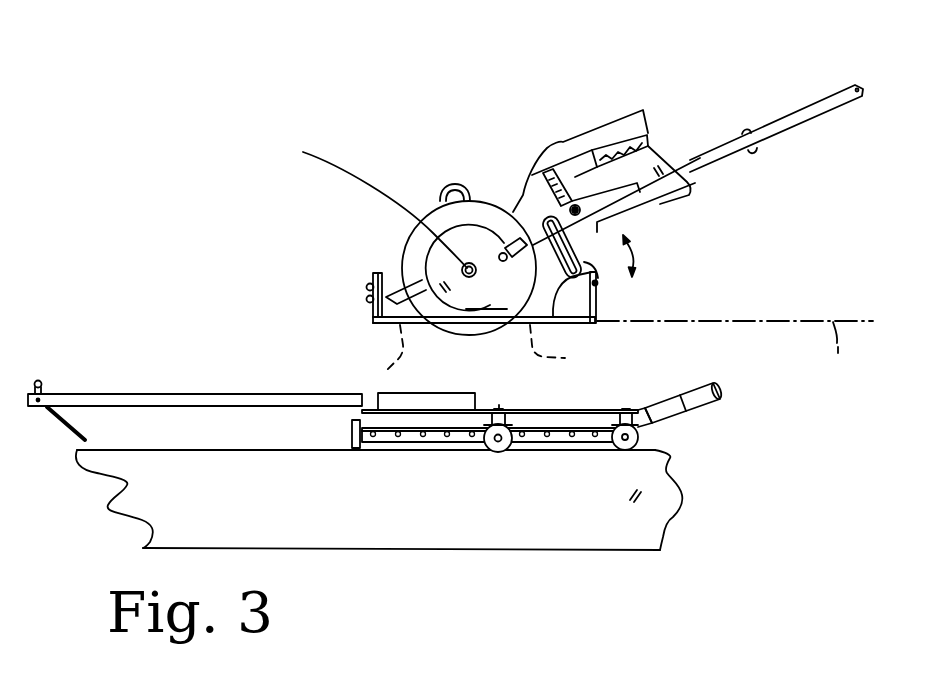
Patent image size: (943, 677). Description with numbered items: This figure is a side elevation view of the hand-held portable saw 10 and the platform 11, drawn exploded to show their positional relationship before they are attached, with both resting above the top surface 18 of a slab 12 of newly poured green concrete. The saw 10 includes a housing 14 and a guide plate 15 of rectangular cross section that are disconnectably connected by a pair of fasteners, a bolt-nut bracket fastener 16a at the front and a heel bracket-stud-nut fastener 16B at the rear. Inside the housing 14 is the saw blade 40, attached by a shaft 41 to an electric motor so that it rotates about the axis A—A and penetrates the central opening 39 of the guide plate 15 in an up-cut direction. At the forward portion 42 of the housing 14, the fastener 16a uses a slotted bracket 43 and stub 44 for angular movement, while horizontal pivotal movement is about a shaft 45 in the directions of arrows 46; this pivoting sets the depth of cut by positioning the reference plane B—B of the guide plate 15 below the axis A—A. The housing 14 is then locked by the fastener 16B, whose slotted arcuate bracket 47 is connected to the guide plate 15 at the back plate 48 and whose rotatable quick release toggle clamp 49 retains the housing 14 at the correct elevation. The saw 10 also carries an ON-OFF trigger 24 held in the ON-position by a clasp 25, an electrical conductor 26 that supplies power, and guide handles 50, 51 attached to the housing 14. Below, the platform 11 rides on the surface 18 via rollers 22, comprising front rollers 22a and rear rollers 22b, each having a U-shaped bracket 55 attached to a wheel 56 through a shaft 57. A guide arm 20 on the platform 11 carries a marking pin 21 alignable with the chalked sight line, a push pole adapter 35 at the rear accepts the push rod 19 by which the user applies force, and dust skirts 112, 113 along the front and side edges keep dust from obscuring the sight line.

The hand-held portable saw 10 is at (376, 72).
The platform 11 is at (66, 474).
The slab 12 is at (648, 513).
The housing 14 is at (510, 196).
The guide plate 15 is at (598, 272).
The bolt-nut bracket fastener 16a is at (360, 298).
The heel bracket-stud-nut fastener 16B is at (607, 289).
The top surface 18 is at (655, 450).
The push rod 19 is at (712, 382).
The guide arm 20 is at (130, 385).
The marking pin 21 is at (68, 431).
The rollers 22 is at (522, 442).
The front rollers 22a is at (490, 445).
The rear rollers 22b is at (640, 431).
The ON-OFF trigger 24 is at (592, 158).
The clasp 25 is at (606, 158).
The conductor 26 is at (778, 142).
The push pole adapter 35 is at (690, 378).
The central opening 39 is at (490, 358).
The saw blade 40 is at (443, 300).
The shaft 41 is at (455, 252).
The forward portion 42 is at (393, 285).
The slotted bracket 43 is at (371, 287).
The stub 44 is at (366, 292).
The shaft 45 is at (384, 328).
The arrows 46 is at (640, 248).
The slotted arcuate bracket 47 is at (562, 323).
The back plate 48 is at (598, 313).
The quick release toggle clamp 49 is at (575, 211).
The guide handle 50 is at (445, 185).
The guide handle 51 is at (656, 168).
The U-shaped bracket 55 is at (620, 448).
The wheel 56 is at (506, 456).
The shaft 57 is at (497, 455).
The dust skirt 112 is at (343, 437).
The dust skirt 113 is at (403, 443).